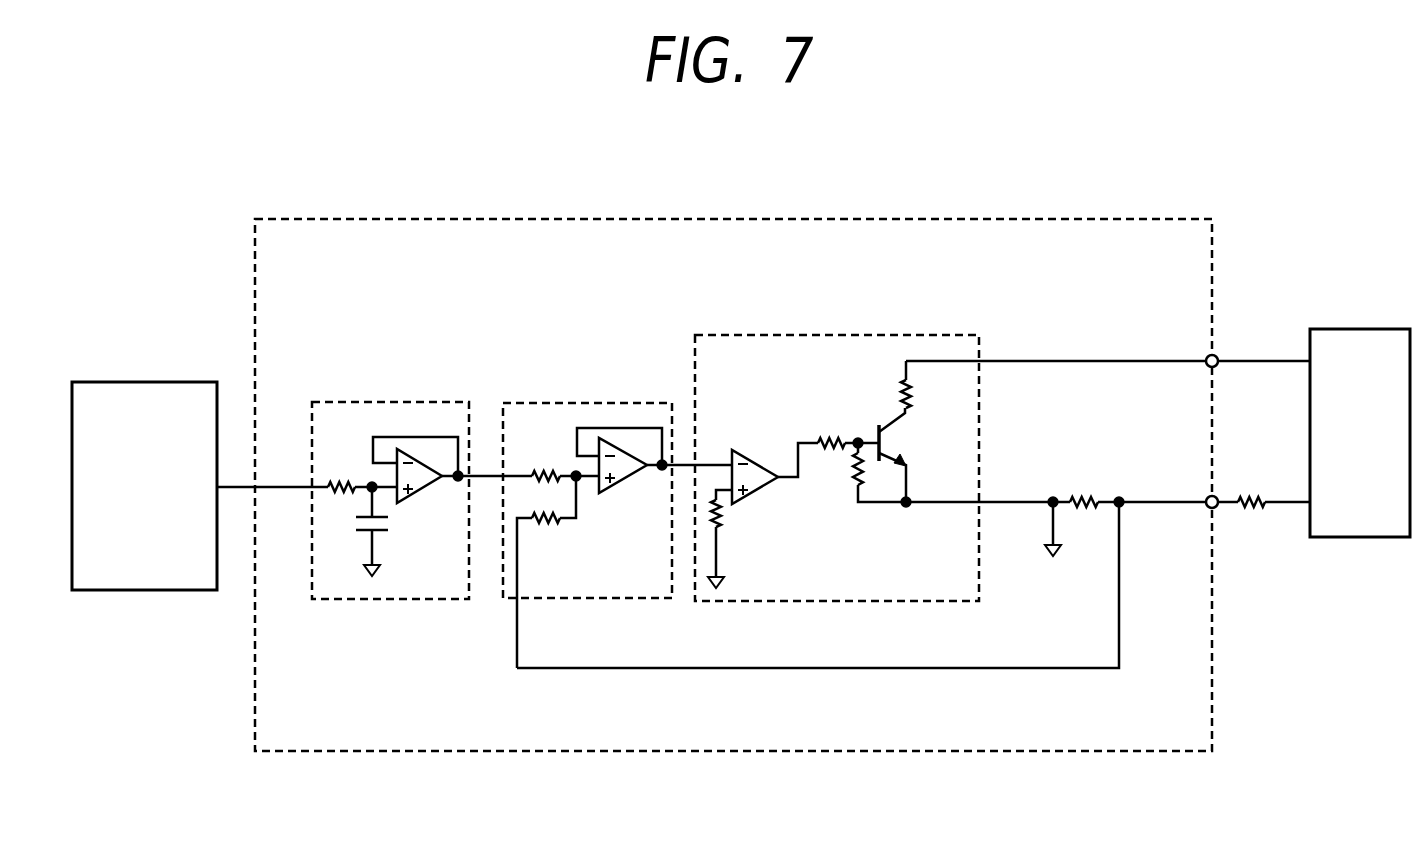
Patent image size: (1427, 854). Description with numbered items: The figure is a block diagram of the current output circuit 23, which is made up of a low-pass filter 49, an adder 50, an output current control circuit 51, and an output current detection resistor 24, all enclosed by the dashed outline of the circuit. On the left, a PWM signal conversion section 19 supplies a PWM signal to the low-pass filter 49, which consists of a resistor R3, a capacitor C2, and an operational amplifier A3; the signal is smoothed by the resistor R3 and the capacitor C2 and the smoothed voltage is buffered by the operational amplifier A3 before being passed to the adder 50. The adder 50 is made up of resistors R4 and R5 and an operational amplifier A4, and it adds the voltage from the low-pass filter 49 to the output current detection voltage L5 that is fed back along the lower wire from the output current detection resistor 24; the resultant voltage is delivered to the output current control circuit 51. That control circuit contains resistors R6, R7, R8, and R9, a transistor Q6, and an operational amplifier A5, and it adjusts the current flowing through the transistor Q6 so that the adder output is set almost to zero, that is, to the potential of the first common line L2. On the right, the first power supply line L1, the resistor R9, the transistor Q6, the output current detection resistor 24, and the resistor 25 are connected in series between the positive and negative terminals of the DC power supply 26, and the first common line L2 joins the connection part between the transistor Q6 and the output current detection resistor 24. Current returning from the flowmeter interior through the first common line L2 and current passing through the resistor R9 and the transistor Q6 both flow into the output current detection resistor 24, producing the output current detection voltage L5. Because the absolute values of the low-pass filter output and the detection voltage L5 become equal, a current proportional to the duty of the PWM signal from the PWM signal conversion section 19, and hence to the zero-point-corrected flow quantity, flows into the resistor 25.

The PWM signal conversion section 19 is at (143, 382).
The current output circuit 23 is at (723, 219).
The low-pass filter 49 is at (400, 402).
The adder 50 is at (595, 403).
The output current control circuit 51 is at (851, 335).
The output current detection resistor 24 is at (1085, 500).
The resistor 25 is at (1252, 500).
The DC power supply 26 is at (1360, 329).
The first power supply line L1 is at (1080, 361).
The first common line L2 is at (1053, 529).
The output current detection voltage L5 is at (790, 670).
The resistor R3 is at (340, 482).
The capacitor C2 is at (356, 522).
The operational amplifier A3 is at (422, 489).
The resistor R4 is at (543, 470).
The resistor R5 is at (546, 527).
The operational amplifier A4 is at (622, 481).
The operational amplifier A5 is at (752, 450).
The resistor R6 is at (724, 527).
The resistor R7 is at (832, 436).
The resistor R8 is at (852, 492).
The resistor R9 is at (916, 395).
The transistor Q6 is at (890, 440).